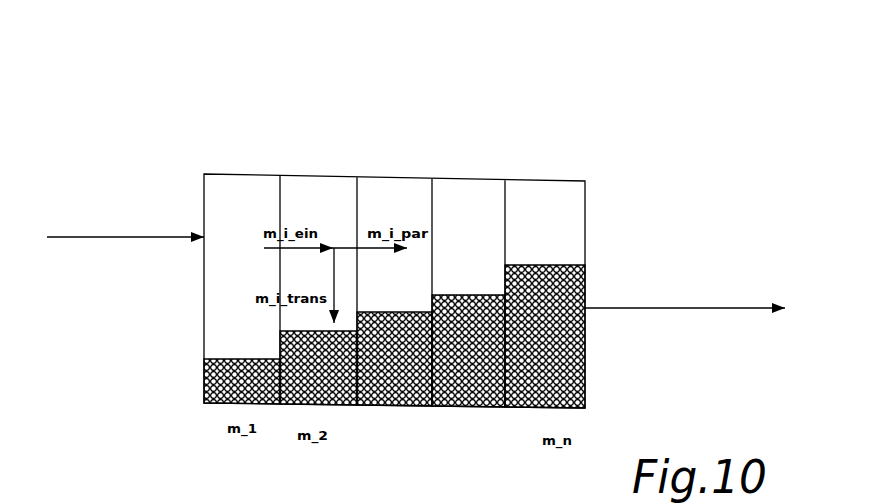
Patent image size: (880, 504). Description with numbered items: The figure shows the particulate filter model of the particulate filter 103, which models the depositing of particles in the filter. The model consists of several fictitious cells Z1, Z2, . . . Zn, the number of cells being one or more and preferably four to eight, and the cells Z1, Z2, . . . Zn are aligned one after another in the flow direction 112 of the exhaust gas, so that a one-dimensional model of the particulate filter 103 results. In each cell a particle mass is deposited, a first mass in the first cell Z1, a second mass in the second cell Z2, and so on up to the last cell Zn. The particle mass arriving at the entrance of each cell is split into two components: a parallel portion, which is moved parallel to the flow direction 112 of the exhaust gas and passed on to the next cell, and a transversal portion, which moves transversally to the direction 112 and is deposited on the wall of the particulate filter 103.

The particulate filter 103 is at (203, 338).
The flow direction of the exhaust gas 112 is at (108, 235).
The first cell Z1 is at (242, 170).
The second cell Z2 is at (313, 170).
The nth cell Zn is at (538, 170).